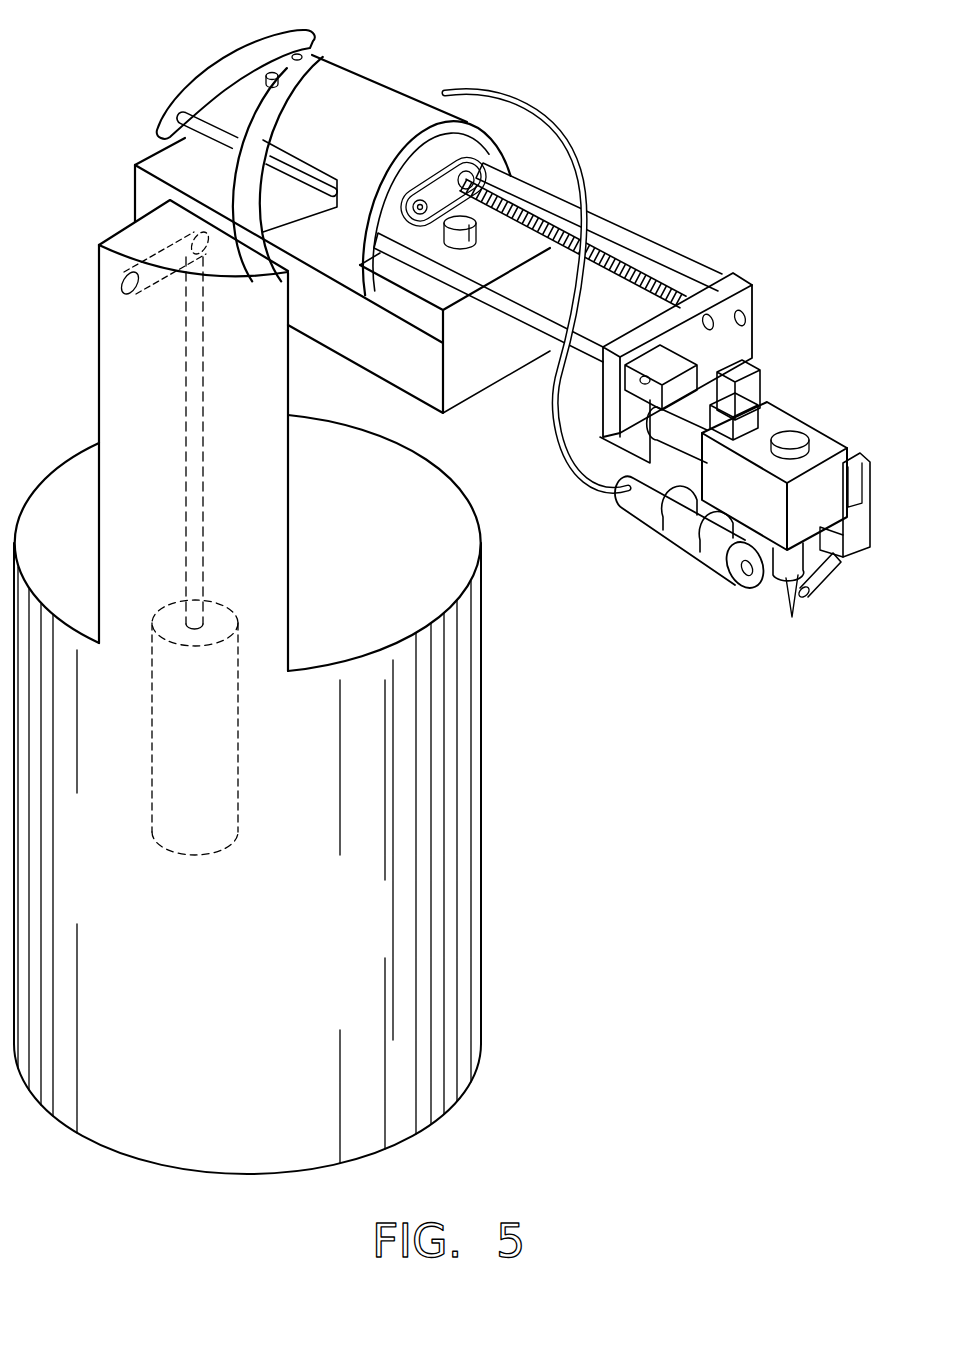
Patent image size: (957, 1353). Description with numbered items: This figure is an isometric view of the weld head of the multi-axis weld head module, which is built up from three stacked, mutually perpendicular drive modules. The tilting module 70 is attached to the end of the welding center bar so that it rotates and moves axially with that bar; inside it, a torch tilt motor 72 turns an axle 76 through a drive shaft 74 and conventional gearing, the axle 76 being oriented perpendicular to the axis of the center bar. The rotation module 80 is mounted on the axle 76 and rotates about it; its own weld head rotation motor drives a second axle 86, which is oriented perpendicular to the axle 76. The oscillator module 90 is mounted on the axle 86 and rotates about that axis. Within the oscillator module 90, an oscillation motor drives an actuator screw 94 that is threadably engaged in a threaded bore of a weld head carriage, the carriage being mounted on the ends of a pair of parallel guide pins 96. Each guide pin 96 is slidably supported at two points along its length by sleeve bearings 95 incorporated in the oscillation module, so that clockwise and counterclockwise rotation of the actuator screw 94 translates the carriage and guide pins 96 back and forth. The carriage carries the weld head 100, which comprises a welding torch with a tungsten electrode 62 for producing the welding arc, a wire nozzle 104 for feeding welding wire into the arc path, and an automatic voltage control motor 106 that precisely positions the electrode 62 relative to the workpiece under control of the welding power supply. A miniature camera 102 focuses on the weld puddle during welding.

The tungsten electrode 62 is at (790, 598).
The tilting module 70 is at (487, 719).
The torch tilt motor 72 is at (241, 758).
The drive shaft 74 is at (206, 462).
The axle 76 is at (142, 243).
The rotation module 80 is at (403, 399).
The axle 86 is at (478, 222).
The oscillator module 90 is at (400, 66).
The actuator screw 94 is at (657, 300).
The sleeve bearings 95 is at (260, 137).
The guide pins 96 is at (628, 242).
The weld head 100 is at (825, 294).
The miniature camera 102 is at (686, 565).
The wire nozzle 104 is at (818, 598).
The automatic voltage control motor 106 is at (777, 409).